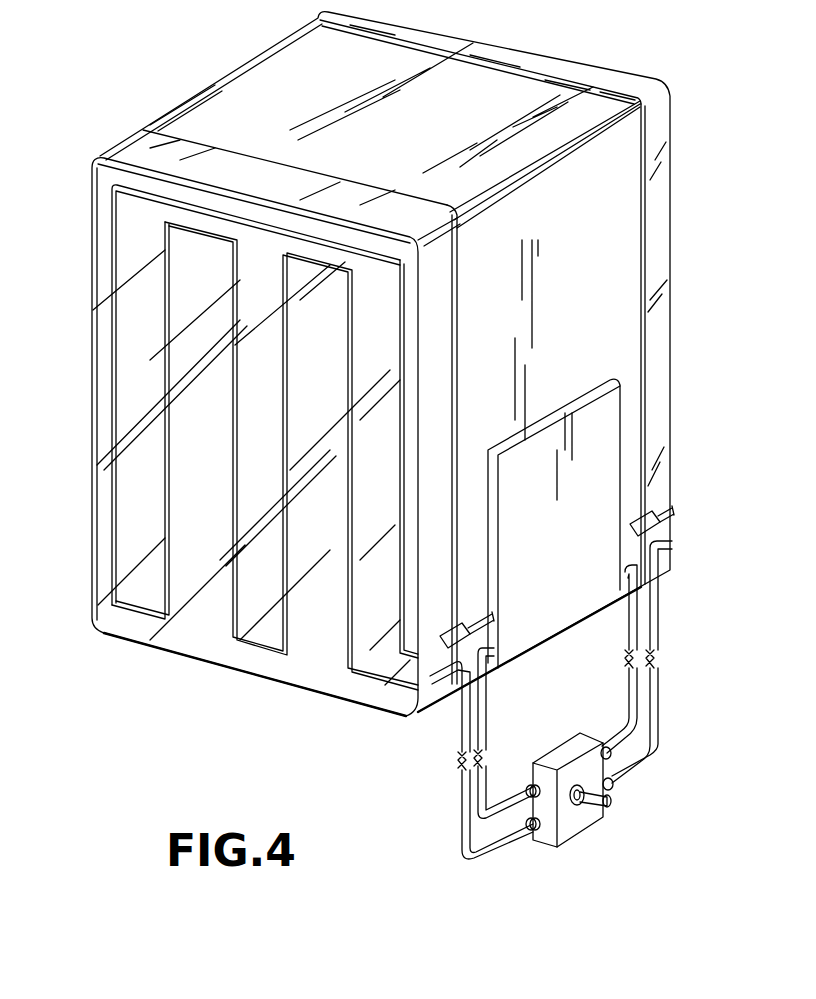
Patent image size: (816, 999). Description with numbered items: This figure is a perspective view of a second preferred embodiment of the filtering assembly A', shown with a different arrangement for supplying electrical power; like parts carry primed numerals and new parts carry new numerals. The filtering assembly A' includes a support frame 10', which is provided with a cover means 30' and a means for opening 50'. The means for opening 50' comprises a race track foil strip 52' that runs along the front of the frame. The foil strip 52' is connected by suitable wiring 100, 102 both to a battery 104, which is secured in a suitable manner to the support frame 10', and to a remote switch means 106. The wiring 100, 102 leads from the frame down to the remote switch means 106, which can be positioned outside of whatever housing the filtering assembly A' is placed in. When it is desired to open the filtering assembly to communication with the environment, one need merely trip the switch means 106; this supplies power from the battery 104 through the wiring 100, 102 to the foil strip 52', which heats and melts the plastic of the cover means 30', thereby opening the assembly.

The support frame 10' is at (380, 354).
The cover means 30' is at (348, 102).
The filtering assembly A' is at (399, 364).
The means for opening 50' is at (228, 437).
The race track foil strip 52' is at (102, 422).
The wiring 100 is at (460, 718).
The wiring 102 is at (473, 617).
The battery 104 is at (610, 470).
The remote switch means 106 is at (572, 817).